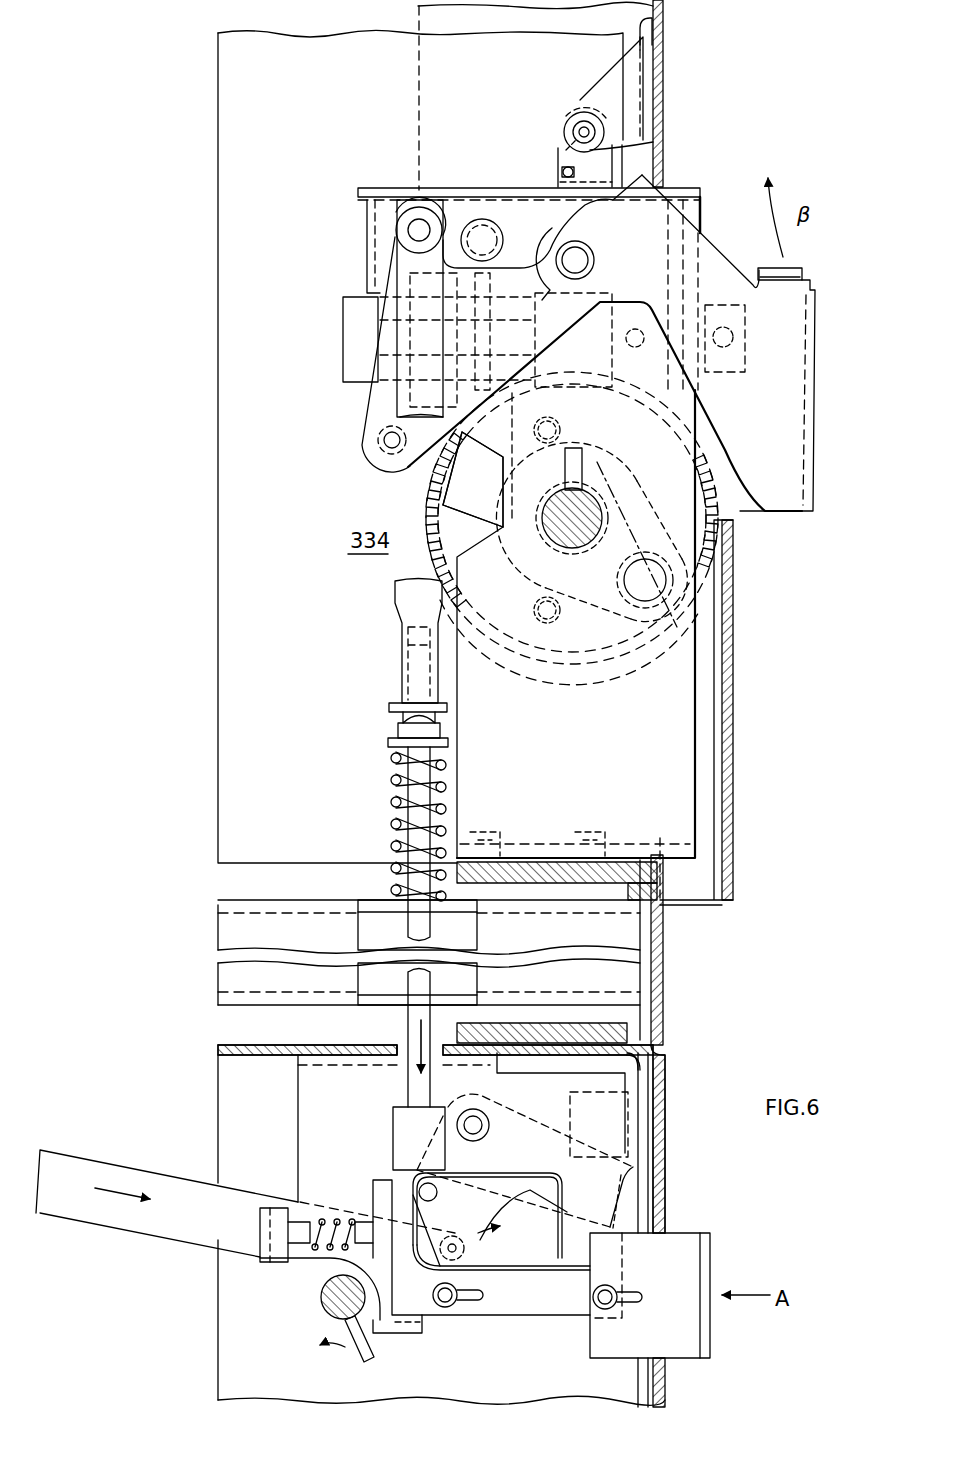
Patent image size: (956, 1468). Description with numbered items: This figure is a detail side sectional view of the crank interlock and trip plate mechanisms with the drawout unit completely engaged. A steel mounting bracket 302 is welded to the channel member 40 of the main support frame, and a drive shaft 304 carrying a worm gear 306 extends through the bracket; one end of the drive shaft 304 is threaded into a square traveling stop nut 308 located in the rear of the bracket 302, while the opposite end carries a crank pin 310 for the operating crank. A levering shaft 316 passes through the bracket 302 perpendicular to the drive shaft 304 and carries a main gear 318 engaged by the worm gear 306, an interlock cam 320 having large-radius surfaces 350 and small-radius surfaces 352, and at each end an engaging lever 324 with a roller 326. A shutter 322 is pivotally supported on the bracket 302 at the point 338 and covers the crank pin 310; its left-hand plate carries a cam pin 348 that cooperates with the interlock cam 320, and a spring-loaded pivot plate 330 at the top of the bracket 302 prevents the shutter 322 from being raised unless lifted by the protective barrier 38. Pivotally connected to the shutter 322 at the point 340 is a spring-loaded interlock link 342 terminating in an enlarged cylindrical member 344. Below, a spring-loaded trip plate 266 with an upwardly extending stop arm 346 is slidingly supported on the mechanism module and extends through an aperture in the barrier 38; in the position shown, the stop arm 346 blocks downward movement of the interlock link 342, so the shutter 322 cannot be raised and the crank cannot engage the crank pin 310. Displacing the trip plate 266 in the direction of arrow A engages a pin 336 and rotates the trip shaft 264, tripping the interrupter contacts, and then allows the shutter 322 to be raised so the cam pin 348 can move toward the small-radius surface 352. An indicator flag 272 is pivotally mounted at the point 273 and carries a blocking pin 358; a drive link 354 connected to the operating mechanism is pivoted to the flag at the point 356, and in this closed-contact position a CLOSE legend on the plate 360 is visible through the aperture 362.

The protective barrier 38 is at (663, 103).
The channel member 40 is at (663, 997).
The trip shaft 264 is at (348, 1326).
The trip plate 266 is at (694, 1236).
The indicator flag 272 is at (636, 1169).
The pivot point of indicator flag 273 is at (487, 1113).
The mounting bracket 302 is at (688, 193).
The drive shaft 304 is at (545, 362).
The worm gear 306 is at (540, 303).
The traveling stop nut 308 is at (343, 323).
The crank pin 310 is at (726, 338).
The levering shaft 316 is at (572, 519).
The main gear 318 is at (374, 351).
The interlock cam 320 is at (605, 664).
The shutter 322 is at (872, 300).
The engaging lever 324 is at (655, 487).
The roller 326 is at (676, 630).
The spring-loaded pivot plate 330 is at (618, 68).
The pin 336 is at (372, 1358).
The pivot point of shutter 338 is at (575, 258).
The pivot point of interlock link 340 is at (408, 230).
The interlock link 342 is at (395, 598).
The enlarged cylindrical shaped member 344 is at (400, 1116).
The stop arm 346 is at (375, 1182).
The cam pin 348 is at (383, 440).
The large-radius surfaces 350 is at (514, 655).
The small-radius surfaces 352 is at (512, 483).
The drive link 354 is at (100, 1162).
The pivot point of drive link 356 is at (453, 1244).
The blocking pin 358 is at (437, 1192).
The plate 360 is at (612, 1130).
The aperture 362 is at (655, 1096).